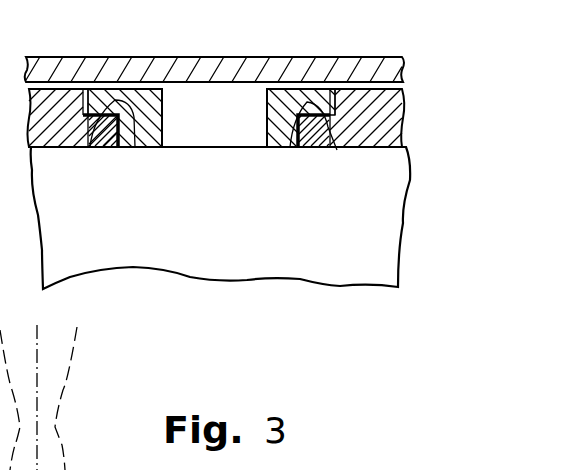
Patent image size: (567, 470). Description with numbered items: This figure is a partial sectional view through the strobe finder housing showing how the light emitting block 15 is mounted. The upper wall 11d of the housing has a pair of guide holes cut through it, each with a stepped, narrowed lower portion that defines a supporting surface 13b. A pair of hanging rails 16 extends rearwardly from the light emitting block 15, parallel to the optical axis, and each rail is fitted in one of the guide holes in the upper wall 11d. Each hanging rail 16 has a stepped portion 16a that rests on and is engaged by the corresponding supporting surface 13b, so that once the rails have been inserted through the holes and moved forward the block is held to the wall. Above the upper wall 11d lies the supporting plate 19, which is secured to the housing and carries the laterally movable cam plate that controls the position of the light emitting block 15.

The supporting plate 19 is at (385, 61).
The upper wall 11d is at (403, 122).
The hanging rail 16 is at (143, 97).
The stepped portion 16a is at (90, 147).
The supporting surface 13b is at (135, 147).
The light emitting block 15 is at (272, 273).